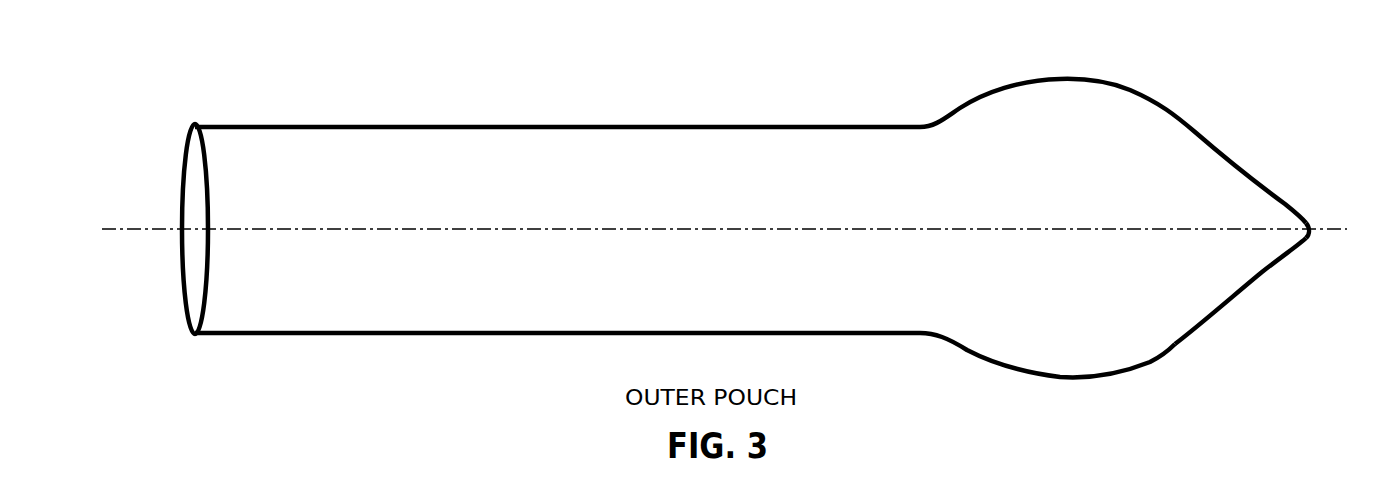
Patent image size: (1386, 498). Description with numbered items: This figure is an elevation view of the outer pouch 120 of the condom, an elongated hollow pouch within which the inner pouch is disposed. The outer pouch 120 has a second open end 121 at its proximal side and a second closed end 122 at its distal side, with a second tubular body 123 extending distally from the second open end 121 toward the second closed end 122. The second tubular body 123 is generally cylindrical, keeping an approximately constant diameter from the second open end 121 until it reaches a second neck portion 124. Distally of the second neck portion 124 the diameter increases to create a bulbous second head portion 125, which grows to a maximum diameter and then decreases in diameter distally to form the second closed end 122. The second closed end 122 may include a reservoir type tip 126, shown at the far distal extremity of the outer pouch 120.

The outer second pouch 120 is at (1194, 93).
The second open end 121 is at (189, 331).
The second closed end 122 is at (1240, 290).
The second tubular body 123 is at (553, 125).
The second neck portion 124 is at (913, 334).
The second head portion 125 is at (1083, 380).
The reservoir type tip 126 is at (1308, 213).